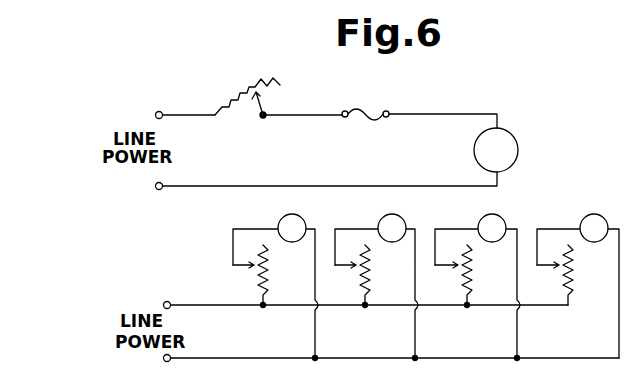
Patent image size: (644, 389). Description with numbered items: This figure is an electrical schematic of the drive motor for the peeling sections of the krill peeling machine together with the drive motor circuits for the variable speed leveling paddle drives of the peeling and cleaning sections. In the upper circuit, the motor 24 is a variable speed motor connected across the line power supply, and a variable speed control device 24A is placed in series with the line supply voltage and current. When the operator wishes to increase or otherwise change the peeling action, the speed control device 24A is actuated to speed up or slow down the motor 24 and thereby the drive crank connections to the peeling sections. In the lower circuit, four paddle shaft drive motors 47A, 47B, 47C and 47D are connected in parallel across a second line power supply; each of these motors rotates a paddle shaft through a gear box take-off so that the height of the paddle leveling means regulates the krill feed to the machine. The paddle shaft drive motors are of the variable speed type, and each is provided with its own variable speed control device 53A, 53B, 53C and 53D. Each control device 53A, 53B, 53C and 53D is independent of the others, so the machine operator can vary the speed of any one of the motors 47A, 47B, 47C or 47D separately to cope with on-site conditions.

The motor 24 is at (517, 140).
The variable speed control device 24A is at (254, 110).
The paddle shaft drive motor 47A is at (281, 218).
The paddle shaft drive motor 47B is at (381, 218).
The paddle shaft drive motor 47C is at (481, 218).
The paddle shaft drive motor 47D is at (582, 218).
The variable speed control device 53A is at (270, 276).
The variable speed control device 53B is at (372, 276).
The variable speed control device 53C is at (472, 276).
The variable speed control device 53D is at (572, 285).